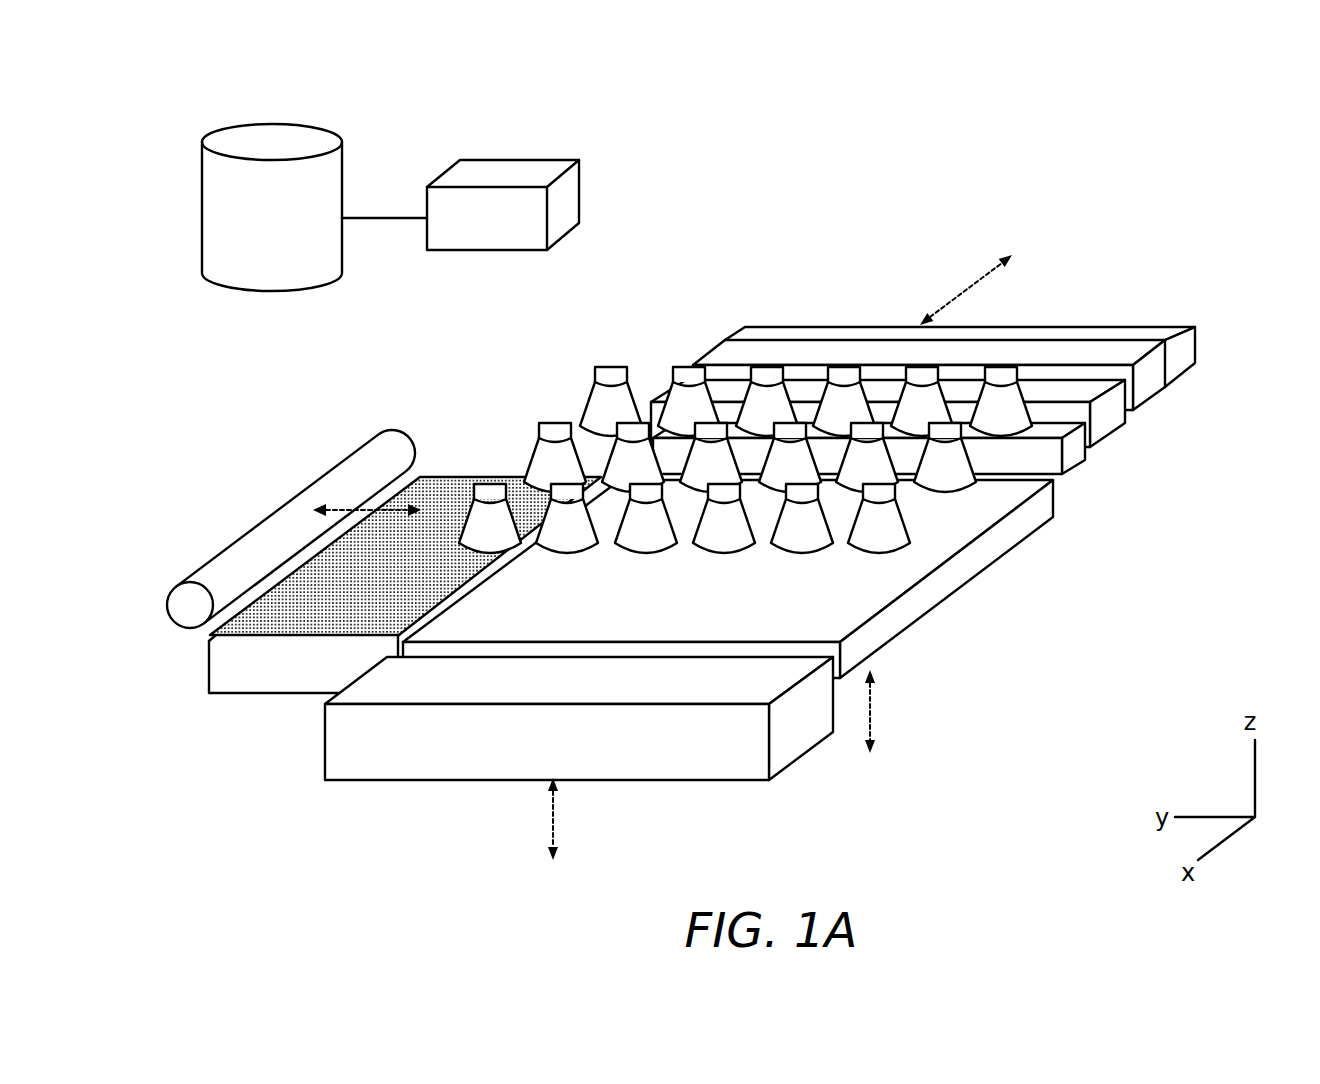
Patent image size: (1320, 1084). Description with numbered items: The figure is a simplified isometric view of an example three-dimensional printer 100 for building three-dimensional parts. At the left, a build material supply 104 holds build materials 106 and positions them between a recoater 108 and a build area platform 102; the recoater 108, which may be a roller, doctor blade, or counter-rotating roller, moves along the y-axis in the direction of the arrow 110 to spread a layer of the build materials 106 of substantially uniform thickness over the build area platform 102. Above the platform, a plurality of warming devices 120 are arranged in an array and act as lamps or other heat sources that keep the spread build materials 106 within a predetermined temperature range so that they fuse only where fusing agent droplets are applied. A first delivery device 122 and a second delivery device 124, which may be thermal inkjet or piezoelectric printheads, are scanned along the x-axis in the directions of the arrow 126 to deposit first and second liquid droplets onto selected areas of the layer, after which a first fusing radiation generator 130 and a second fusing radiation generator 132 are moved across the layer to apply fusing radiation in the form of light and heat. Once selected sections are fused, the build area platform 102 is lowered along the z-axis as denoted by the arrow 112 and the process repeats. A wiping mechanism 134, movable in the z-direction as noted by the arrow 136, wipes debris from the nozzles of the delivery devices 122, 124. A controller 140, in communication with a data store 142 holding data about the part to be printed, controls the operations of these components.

The three-dimensional (3D) printer 100 is at (286, 63).
The build area platform 102 is at (897, 640).
The build material supply 104 is at (262, 693).
The build materials 106 is at (233, 626).
The recoater 108 is at (296, 494).
The arrow 110 is at (387, 505).
The arrow 112 is at (874, 703).
The warming devices 120 is at (612, 367).
The first delivery device 122 is at (1110, 433).
The second delivery device 124 is at (1160, 400).
The arrow 126 is at (962, 296).
The first fusing radiation generator 130 is at (1077, 466).
The second fusing radiation generator 132 is at (1152, 321).
The wiping mechanism 134 is at (387, 781).
The arrow 136 is at (555, 810).
The controller 140 is at (531, 161).
The data store 142 is at (250, 236).